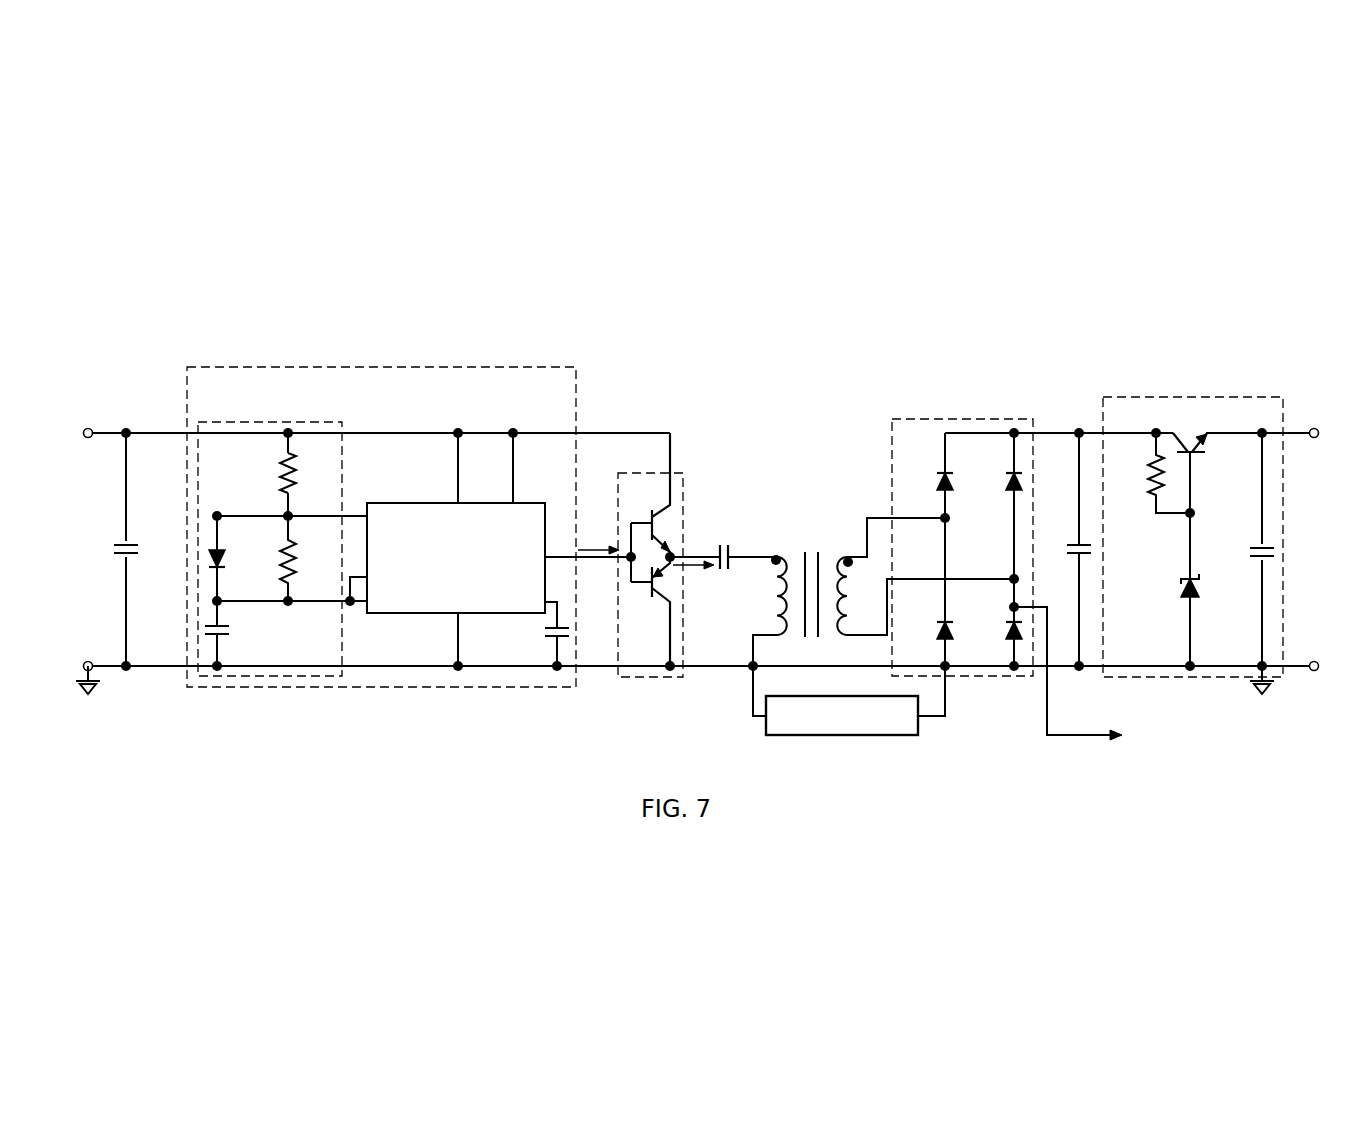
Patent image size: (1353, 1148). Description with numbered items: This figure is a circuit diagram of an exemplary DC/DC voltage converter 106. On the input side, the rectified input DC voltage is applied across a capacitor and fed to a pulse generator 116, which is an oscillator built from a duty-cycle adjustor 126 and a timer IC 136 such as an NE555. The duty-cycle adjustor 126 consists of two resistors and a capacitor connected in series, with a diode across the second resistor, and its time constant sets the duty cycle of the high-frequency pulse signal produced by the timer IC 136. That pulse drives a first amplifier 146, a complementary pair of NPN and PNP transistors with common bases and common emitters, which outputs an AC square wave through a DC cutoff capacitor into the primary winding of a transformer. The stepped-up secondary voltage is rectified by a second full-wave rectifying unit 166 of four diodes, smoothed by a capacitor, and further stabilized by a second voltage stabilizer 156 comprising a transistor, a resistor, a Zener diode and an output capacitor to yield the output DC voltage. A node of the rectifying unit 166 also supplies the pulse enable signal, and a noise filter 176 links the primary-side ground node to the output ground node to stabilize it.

The voltage converter 106 is at (788, 393).
The pulse generator 116 is at (509, 367).
The duty-cycle adjustor 126 is at (308, 422).
The timer IC 136 is at (475, 571).
The first amplifier 146 is at (684, 477).
The second voltage stabilizer 156 is at (1200, 397).
The second full-wave rectifying unit 166 is at (963, 419).
The noise filter 176 is at (843, 739).